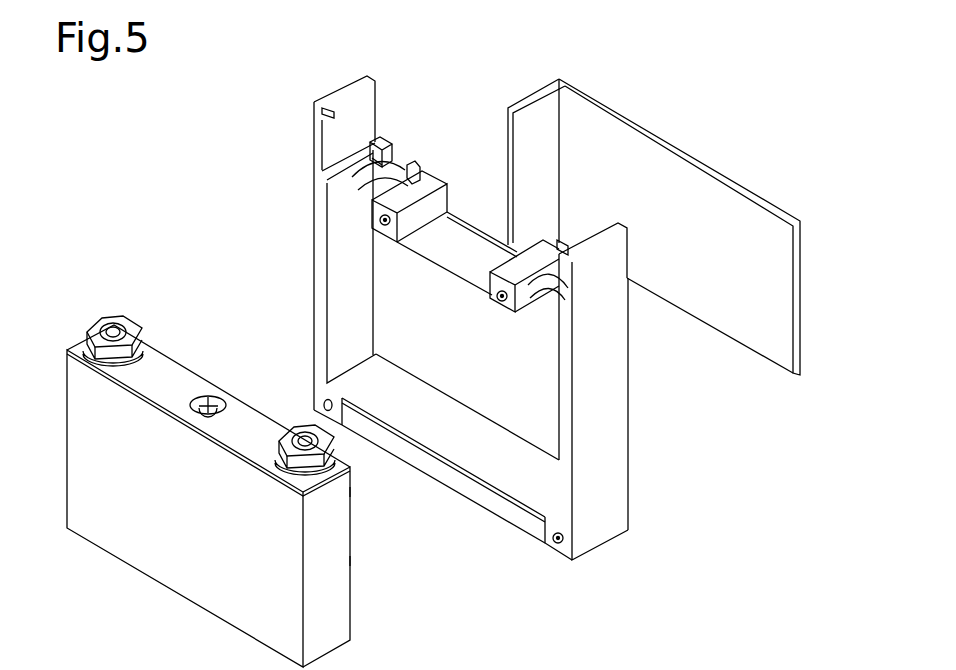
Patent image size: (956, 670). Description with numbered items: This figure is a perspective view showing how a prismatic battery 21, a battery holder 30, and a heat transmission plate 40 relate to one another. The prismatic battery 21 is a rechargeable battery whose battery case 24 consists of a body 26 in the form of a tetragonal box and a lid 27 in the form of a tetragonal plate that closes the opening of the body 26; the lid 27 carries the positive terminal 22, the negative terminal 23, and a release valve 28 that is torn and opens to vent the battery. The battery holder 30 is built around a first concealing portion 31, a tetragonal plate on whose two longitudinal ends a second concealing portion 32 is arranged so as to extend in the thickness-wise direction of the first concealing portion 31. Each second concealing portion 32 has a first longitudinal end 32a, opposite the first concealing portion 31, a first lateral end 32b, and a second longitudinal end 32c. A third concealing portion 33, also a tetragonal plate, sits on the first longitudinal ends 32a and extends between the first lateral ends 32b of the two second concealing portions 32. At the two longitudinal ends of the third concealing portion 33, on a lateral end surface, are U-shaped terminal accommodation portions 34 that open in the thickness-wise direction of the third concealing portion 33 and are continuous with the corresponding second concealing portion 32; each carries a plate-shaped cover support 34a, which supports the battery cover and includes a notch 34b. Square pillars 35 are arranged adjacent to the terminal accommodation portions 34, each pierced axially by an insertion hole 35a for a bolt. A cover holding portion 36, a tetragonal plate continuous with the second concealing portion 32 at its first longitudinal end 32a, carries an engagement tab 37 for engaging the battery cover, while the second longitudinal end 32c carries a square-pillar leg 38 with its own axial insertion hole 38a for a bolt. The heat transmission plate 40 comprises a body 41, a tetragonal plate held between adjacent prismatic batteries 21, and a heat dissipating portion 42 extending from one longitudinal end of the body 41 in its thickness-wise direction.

The prismatic battery 21 is at (57, 303).
The positive terminal 22 is at (137, 323).
The negative terminal 23 is at (333, 448).
The battery case 24 is at (410, 483).
The body 26 is at (352, 560).
The lid 27 is at (352, 492).
The release valve 28 is at (210, 394).
The battery holder 30 is at (234, 183).
The first concealing portion 31 is at (455, 438).
The second concealing portion 32 is at (362, 318).
The first longitudinal end 32a is at (318, 200).
The first lateral end 32b is at (377, 342).
The second longitudinal end 32c is at (350, 357).
The third concealing portion 33 is at (462, 250).
The terminal accommodation portion 34 is at (390, 172).
The cover support 34a is at (378, 145).
The notch 34b is at (368, 194).
The pillar 35 is at (432, 188).
The insertion hole 35a is at (386, 228).
The cover holding portion 36 is at (328, 147).
The engagement tab 37 is at (322, 107).
The leg 38 is at (322, 405).
The insertion hole 38a is at (557, 547).
The heat transmission plate 40 is at (776, 142).
The body 41 is at (755, 343).
The heat dissipating portion 42 is at (522, 124).